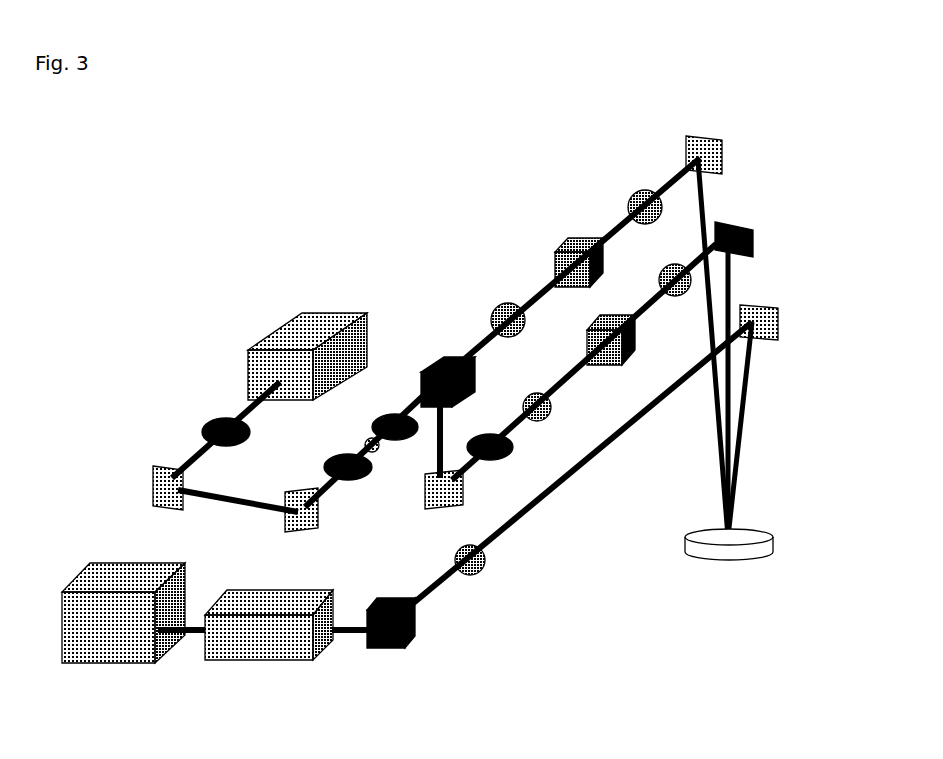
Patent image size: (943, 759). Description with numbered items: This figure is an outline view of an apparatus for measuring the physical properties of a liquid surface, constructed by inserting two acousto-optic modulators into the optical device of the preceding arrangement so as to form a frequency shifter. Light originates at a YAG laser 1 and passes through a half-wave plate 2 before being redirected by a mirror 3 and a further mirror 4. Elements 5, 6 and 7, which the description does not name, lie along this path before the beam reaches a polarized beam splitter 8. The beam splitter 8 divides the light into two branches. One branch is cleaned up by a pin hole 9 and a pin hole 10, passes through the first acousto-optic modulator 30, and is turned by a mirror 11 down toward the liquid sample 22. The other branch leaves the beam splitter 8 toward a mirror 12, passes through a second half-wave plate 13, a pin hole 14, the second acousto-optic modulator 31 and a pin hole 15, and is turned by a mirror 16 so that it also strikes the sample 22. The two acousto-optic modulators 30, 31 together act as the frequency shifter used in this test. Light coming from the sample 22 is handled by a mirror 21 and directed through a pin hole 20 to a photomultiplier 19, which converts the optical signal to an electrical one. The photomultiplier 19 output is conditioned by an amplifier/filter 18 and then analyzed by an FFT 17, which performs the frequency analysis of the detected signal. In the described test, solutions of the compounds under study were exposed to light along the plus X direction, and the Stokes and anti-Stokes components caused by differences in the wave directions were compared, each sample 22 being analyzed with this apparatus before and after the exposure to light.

The YAG laser 1 is at (278, 338).
The λ/2 plate 2 is at (210, 421).
The mirror 3 is at (160, 478).
The mirror 4 is at (302, 516).
The lens 5 is at (357, 476).
The pinhole 6 is at (375, 452).
The lens 7 is at (397, 412).
The polarized beam splitter 8 is at (437, 362).
The pin hole 9 is at (505, 310).
The pin hole 10 is at (632, 192).
The mirror 11 is at (722, 160).
The mirror 12 is at (440, 498).
The λ/2 plate 13 is at (513, 447).
The pin hole 14 is at (552, 405).
The pin hole 15 is at (680, 296).
The mirror 16 is at (756, 250).
The FFT 17 is at (115, 660).
The amplifier/filter 18 is at (258, 650).
The photomultiplier 19 is at (383, 655).
The pin hole 20 is at (478, 570).
The mirror 21 is at (770, 335).
The sample 22 is at (745, 553).
The acousto-optic modulator 30 is at (568, 243).
The acousto-optic modulator 31 is at (625, 347).